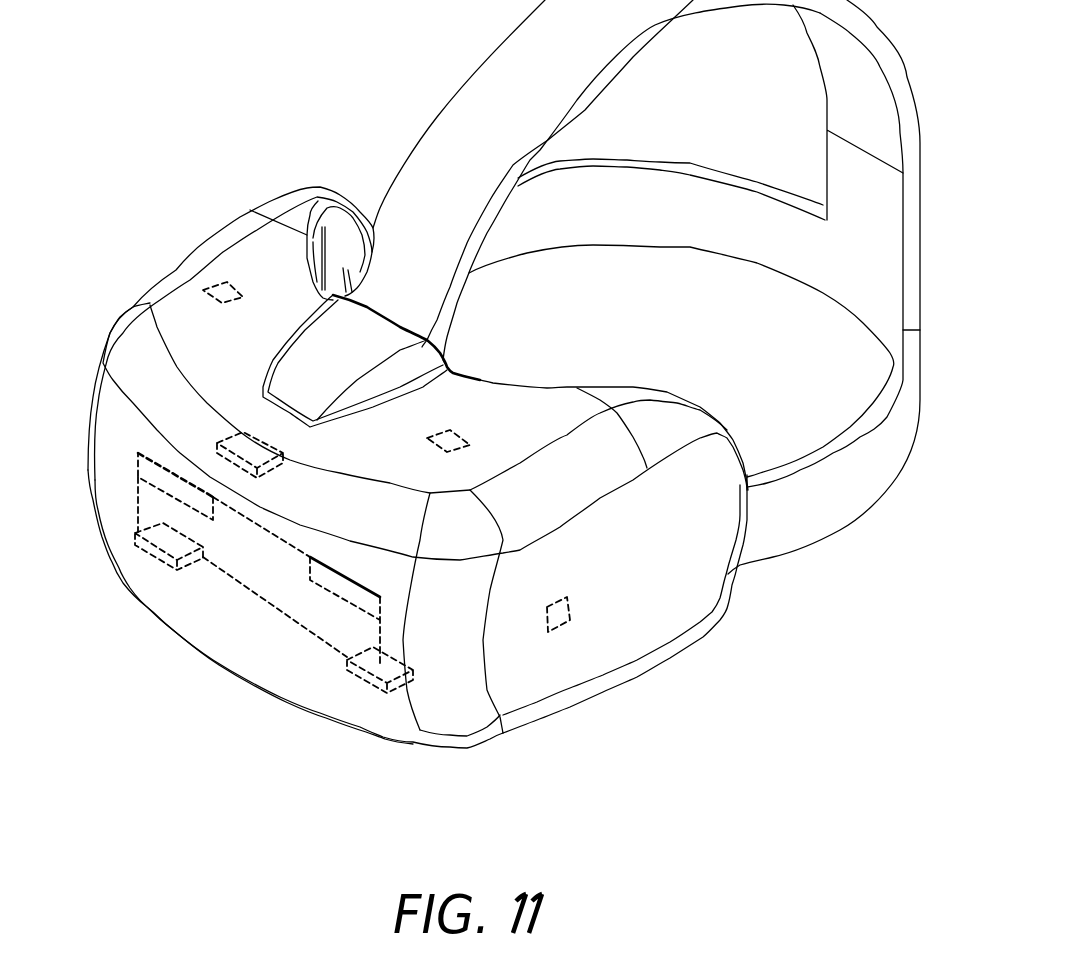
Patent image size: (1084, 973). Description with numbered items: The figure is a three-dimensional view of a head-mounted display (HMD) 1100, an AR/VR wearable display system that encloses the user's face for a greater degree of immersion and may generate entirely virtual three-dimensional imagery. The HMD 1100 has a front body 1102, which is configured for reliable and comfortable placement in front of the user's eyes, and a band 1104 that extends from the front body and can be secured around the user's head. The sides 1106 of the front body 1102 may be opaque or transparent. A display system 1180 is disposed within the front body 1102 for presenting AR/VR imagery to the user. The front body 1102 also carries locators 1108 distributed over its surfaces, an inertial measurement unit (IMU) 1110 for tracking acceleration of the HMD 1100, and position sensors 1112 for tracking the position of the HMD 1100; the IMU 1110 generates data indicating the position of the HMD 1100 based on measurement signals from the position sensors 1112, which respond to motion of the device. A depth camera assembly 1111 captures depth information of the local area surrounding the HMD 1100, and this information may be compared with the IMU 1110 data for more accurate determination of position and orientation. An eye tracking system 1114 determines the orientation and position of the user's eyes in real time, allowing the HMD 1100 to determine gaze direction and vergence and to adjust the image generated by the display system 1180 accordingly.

The head-mounted display 1100 is at (287, 103).
The front body 1102 is at (100, 325).
The band 1104 is at (693, 170).
The sides 1106 is at (653, 577).
The locators 1108 is at (222, 283).
The inertial measurement unit 1110 is at (157, 545).
The depth camera assembly 1111 is at (248, 443).
The position sensors 1112 is at (350, 675).
The eye tracking system 1114 is at (153, 470).
The display system 1180 is at (277, 570).